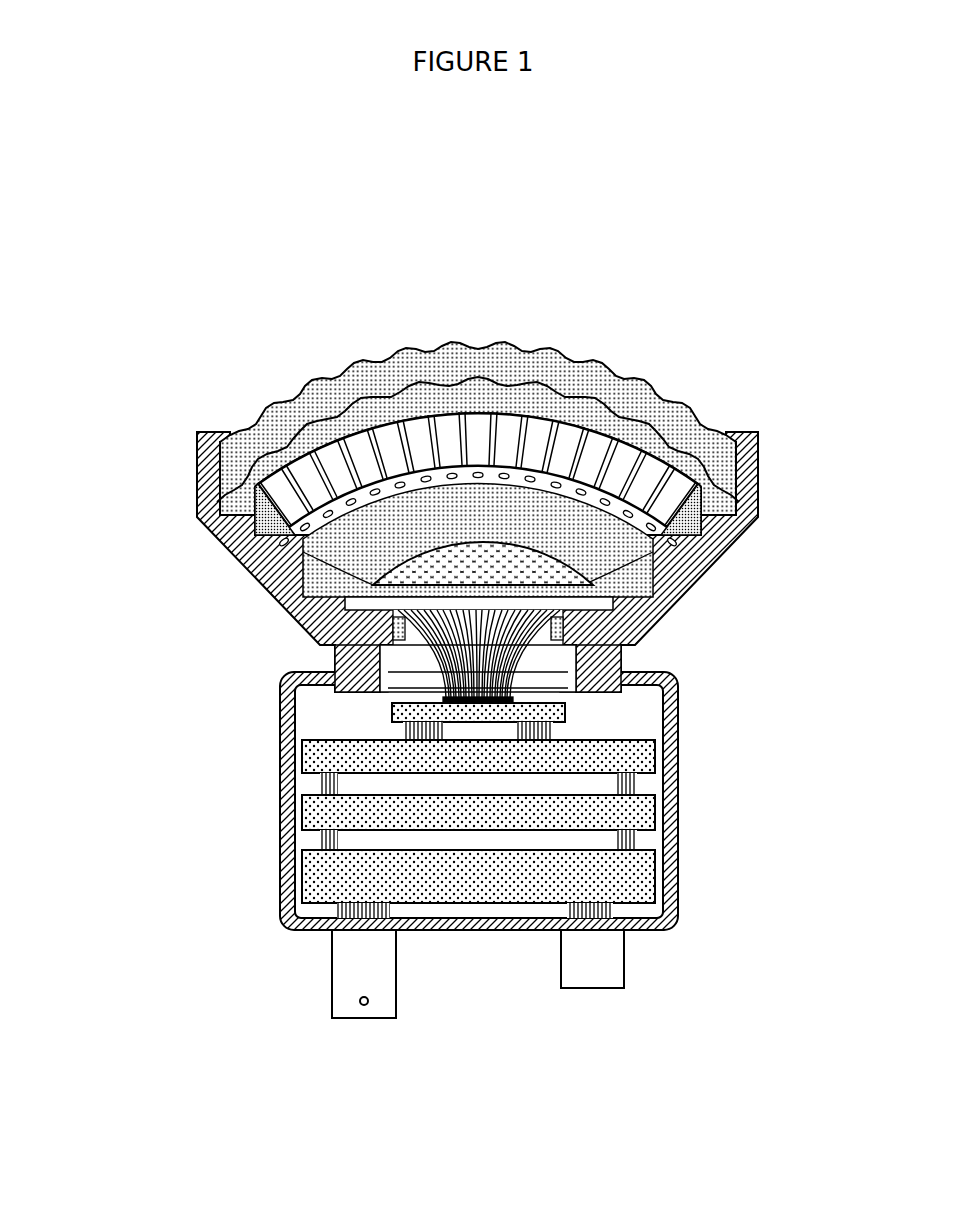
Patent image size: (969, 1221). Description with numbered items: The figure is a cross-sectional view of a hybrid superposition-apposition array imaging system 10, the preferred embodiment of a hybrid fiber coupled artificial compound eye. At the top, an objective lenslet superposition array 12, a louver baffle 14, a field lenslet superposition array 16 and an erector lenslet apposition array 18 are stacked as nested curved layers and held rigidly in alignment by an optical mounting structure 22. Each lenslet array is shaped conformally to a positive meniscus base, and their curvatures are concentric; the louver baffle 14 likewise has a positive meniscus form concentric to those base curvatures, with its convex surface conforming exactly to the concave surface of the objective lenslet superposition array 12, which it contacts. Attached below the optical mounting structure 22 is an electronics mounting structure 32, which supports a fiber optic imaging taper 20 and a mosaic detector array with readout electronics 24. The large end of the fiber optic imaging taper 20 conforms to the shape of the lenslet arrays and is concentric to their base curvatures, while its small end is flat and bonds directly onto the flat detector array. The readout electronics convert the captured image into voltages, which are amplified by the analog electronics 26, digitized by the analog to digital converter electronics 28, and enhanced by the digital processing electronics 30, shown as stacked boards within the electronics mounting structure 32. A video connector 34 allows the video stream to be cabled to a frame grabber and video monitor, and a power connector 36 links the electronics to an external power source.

The hybrid superposition-apposition array imaging system 10 is at (178, 380).
The objective lenslet superposition array 12 is at (200, 488).
The louver baffle 14 is at (650, 508).
The field lenslet superposition array 16 is at (627, 555).
The erector lenslet apposition array 18 is at (385, 587).
The fiber optic imaging taper 20 is at (400, 622).
The optical mounting structure 22 is at (625, 622).
The mosaic detector array with readout electronics 24 is at (537, 704).
The analog electronics 26 is at (320, 752).
The analog to digital converter electronics 28 is at (320, 813).
The digital processing electronics 30 is at (320, 873).
The electronics mounting structure 32 is at (670, 850).
The video connector 34 is at (355, 968).
The power connector 36 is at (605, 956).